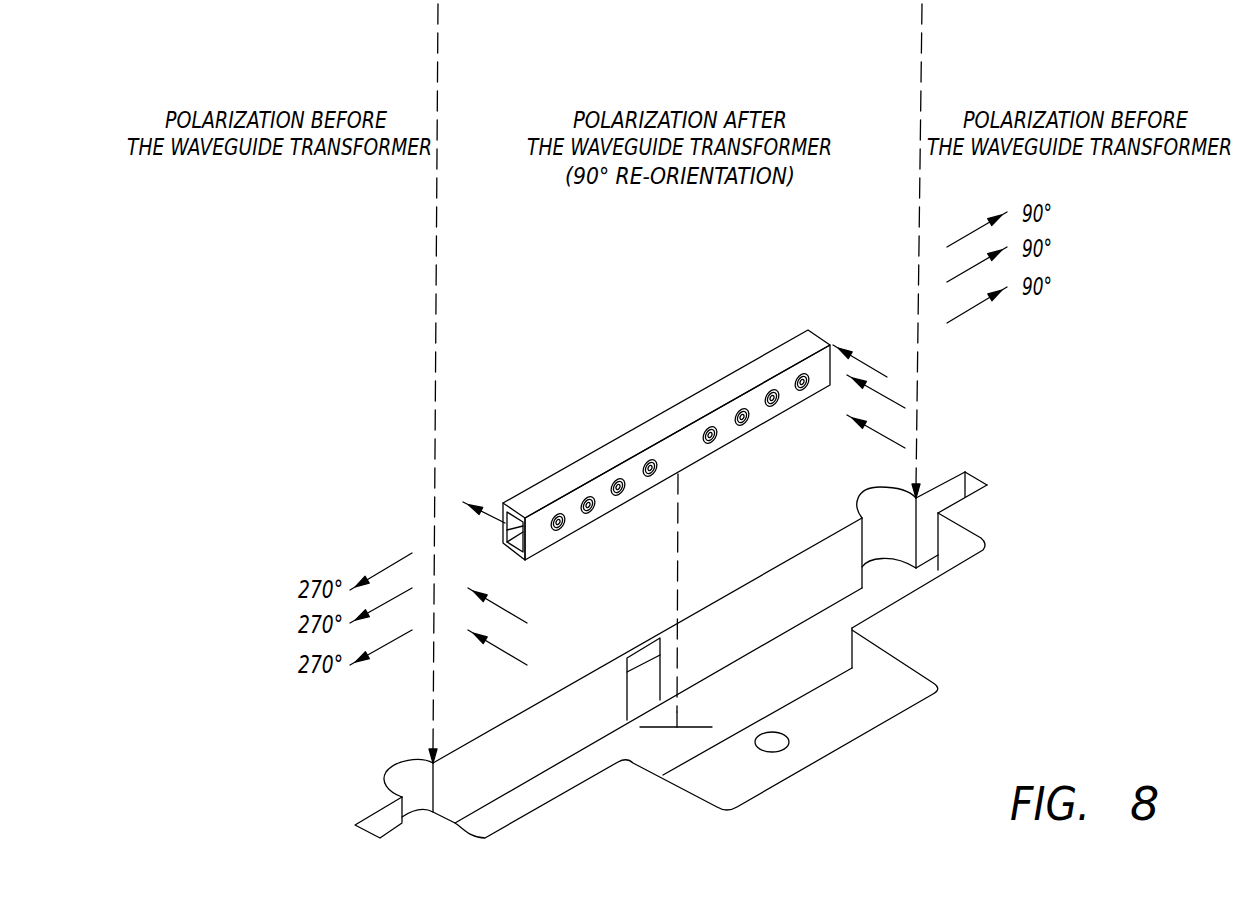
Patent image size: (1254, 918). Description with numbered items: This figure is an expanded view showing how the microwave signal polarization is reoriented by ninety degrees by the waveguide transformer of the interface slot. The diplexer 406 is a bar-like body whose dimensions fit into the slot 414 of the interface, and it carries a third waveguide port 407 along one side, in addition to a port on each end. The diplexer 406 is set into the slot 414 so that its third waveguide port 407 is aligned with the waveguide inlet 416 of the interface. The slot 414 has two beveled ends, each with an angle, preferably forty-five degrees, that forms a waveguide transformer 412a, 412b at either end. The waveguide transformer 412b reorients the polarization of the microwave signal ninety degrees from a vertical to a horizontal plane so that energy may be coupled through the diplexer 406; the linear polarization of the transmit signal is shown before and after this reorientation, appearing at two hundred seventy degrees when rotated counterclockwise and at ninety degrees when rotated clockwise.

The diplexer 406 is at (777, 362).
The third waveguide port 407 is at (655, 417).
The waveguide transformer 412a is at (382, 827).
The waveguide transformer 412b is at (965, 473).
The slot 414 is at (777, 587).
The waveguide inlet 416 is at (648, 681).